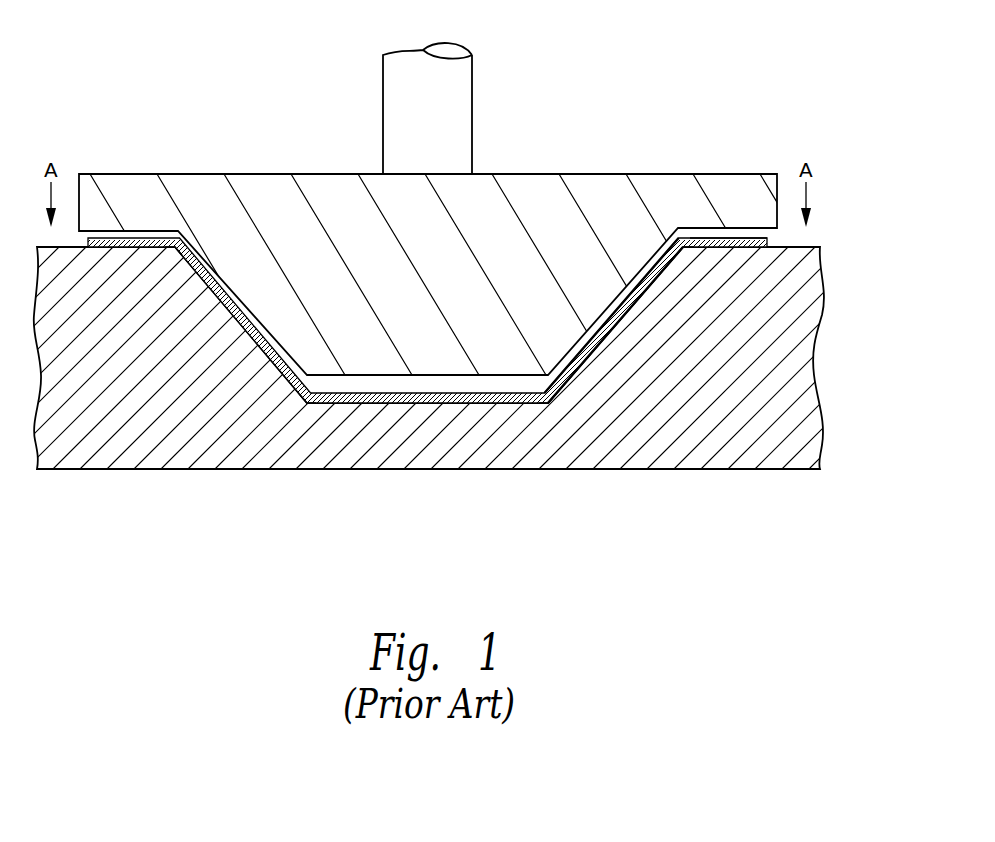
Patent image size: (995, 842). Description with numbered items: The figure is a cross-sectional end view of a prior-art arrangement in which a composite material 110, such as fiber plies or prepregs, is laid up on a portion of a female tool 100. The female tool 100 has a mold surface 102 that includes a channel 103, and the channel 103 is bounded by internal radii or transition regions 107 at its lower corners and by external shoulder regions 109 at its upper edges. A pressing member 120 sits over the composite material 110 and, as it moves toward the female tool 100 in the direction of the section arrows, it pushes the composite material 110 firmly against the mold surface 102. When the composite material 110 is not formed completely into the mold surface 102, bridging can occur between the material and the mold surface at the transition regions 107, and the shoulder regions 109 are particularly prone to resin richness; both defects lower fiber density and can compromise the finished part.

The female tool 100 is at (806, 338).
The mold surface 102 is at (818, 243).
The channel 103 is at (618, 378).
The transition regions 107 is at (304, 412).
The shoulder regions 109 is at (162, 262).
The composite material 110 is at (752, 237).
The pressing member 120 is at (562, 195).